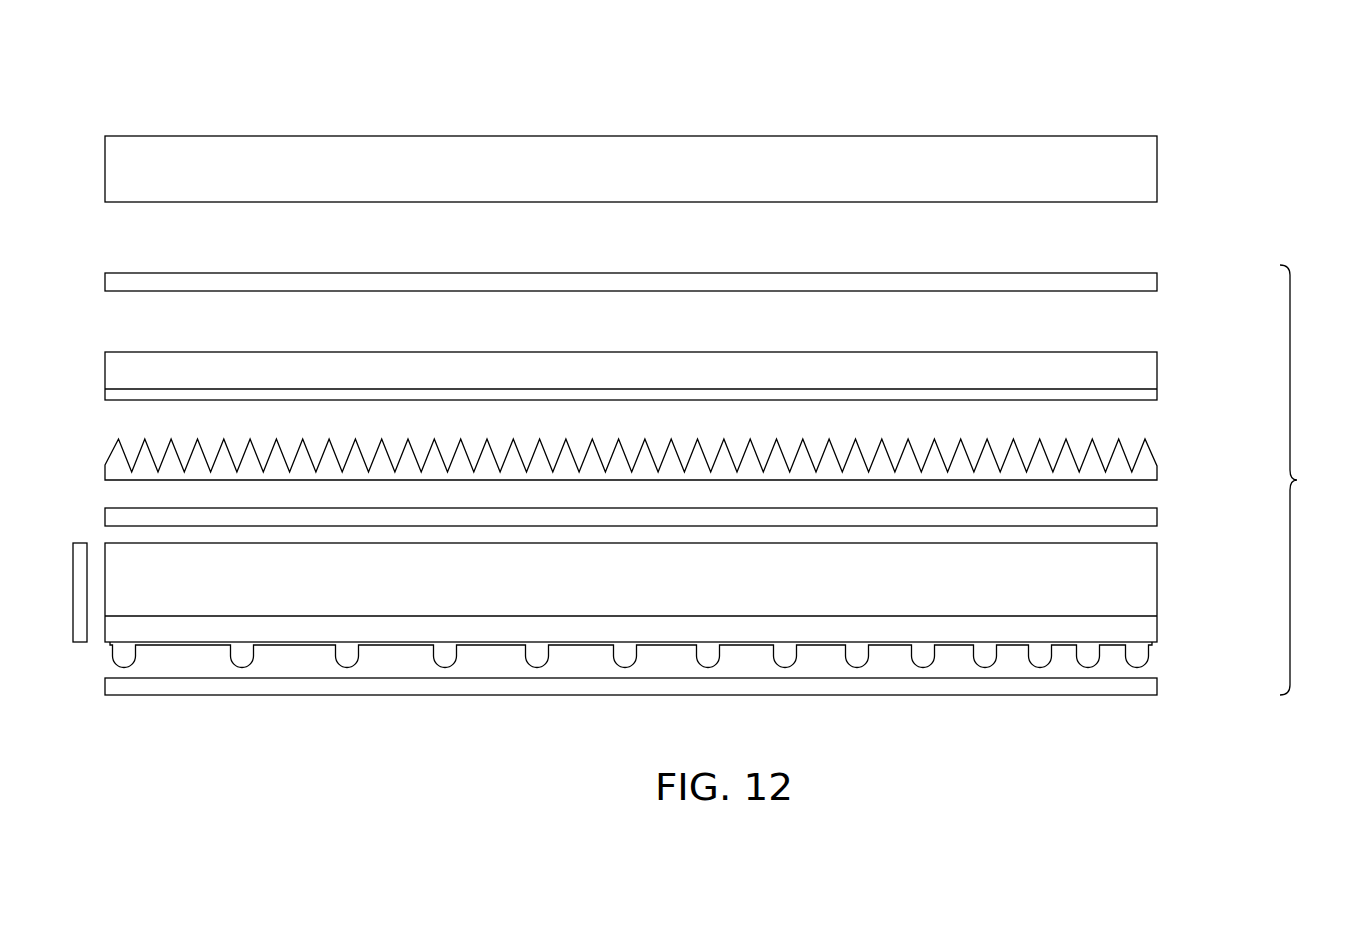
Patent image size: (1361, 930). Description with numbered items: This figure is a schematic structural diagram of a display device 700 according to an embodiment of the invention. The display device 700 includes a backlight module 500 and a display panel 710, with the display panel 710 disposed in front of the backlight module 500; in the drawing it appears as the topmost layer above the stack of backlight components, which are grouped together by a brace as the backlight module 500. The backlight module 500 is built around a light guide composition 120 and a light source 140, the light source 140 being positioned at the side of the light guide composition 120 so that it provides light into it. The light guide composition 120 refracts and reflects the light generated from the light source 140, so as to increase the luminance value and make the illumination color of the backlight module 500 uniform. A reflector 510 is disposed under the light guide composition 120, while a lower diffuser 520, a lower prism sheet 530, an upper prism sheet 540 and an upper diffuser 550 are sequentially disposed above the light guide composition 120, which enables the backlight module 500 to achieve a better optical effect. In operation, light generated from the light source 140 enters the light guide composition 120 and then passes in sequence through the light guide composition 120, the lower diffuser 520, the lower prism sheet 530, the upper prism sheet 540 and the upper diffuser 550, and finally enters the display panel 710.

The display device 700 is at (139, 78).
The display panel 710 is at (1148, 165).
The upper diffuser 550 is at (1148, 290).
The upper prism sheet 540 is at (1148, 375).
The lower prism sheet 530 is at (1147, 462).
The lower diffuser 520 is at (1148, 521).
The light guide composition 120 is at (1168, 581).
The reflector 510 is at (1148, 690).
The light source 140 is at (84, 632).
The backlight module 500 is at (1312, 480).